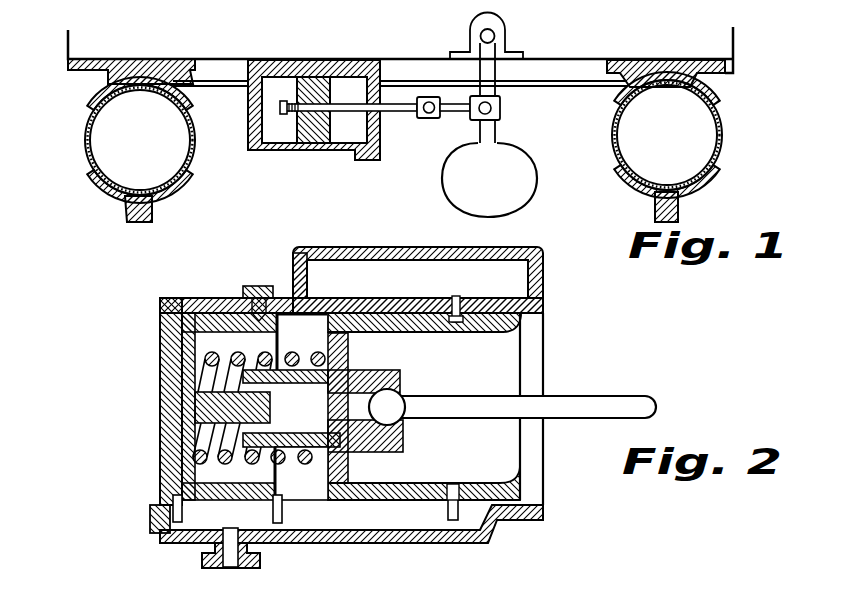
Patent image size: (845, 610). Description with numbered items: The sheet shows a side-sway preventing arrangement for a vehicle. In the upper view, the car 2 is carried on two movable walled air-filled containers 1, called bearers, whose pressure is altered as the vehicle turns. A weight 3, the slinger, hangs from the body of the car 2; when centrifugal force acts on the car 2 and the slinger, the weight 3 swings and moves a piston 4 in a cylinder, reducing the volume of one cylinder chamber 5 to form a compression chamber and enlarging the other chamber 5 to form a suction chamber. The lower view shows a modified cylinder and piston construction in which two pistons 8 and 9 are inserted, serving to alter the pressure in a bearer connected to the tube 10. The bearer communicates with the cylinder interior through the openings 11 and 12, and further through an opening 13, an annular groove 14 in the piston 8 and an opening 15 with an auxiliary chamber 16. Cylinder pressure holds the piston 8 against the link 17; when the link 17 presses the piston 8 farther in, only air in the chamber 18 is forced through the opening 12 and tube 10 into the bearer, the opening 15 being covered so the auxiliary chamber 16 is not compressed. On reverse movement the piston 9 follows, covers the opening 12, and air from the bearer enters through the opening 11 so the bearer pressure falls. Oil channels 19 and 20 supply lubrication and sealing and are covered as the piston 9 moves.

In FIG. 1, the movable walled air-filled container 1 is at (82, 144).
In FIG. 1, the car 2 is at (583, 59).
In FIG. 1, the weight 3 is at (527, 183).
In FIG. 1, the piston 4 is at (319, 152).
In FIG. 1, the cylinder chamber 5 is at (253, 151).
In FIG. 2, the piston 8 is at (512, 327).
In FIG. 2, the piston 9 is at (193, 407).
In FIG. 2, the tube 10 is at (233, 566).
In FIG. 2, the opening 11 is at (165, 505).
In FIG. 2, the opening 12 is at (285, 525).
In FIG. 2, the opening 13 is at (452, 522).
In FIG. 2, the annular groove 14 is at (454, 492).
In FIG. 2, the opening 15 is at (456, 333).
In FIG. 2, the auxiliary chamber 16 is at (418, 280).
In FIG. 2, the link 17 is at (597, 404).
In FIG. 2, the chamber 18 is at (298, 416).
In FIG. 2, the channel 19 is at (262, 300).
In FIG. 2, the channel 20 is at (323, 300).